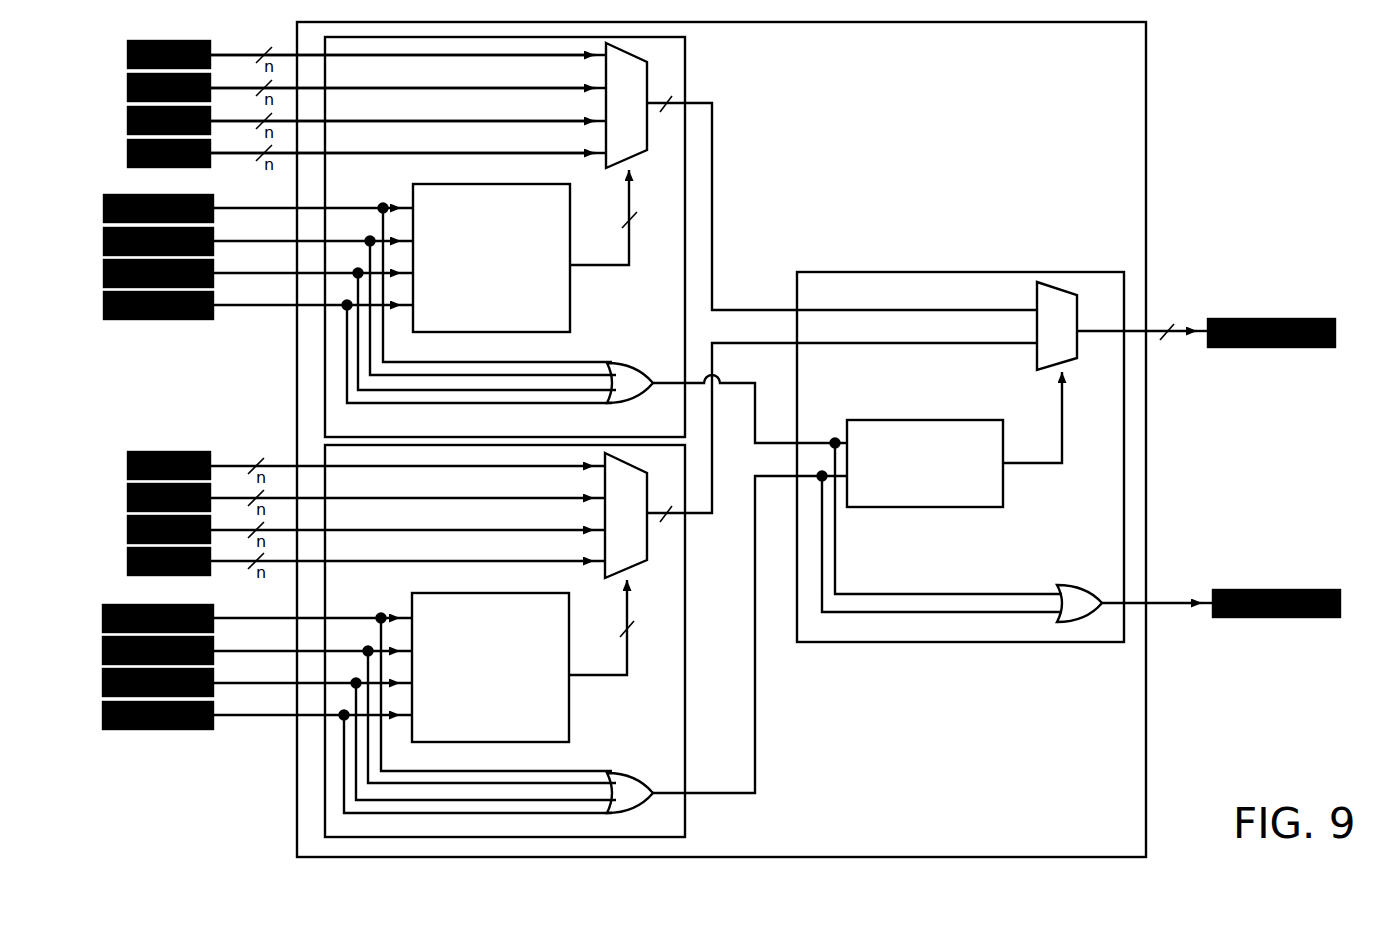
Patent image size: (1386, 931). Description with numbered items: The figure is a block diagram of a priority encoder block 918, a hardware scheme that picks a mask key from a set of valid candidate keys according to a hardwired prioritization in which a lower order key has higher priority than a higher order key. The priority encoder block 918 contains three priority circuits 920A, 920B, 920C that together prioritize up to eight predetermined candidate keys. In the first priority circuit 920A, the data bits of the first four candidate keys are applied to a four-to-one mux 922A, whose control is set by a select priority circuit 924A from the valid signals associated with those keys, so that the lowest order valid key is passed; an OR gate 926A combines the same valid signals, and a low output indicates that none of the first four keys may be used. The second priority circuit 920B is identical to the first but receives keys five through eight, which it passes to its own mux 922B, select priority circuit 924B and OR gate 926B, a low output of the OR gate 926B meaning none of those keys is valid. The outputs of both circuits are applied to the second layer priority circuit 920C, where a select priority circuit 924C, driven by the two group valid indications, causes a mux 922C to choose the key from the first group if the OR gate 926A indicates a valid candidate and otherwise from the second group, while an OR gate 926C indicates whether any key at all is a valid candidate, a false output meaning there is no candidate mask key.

The priority encoder block 918 is at (1146, 153).
The first priority circuit 920A is at (685, 58).
The second priority circuit 920B is at (685, 685).
The second layer priority circuit 920C is at (953, 643).
The mux 922A is at (647, 150).
The mux 922B is at (637, 565).
The mux 922C is at (1077, 358).
The select priority circuit 924A is at (570, 277).
The select priority circuit 924B is at (569, 697).
The select priority circuit 924C is at (1003, 478).
The OR gate 926A is at (634, 362).
The OR gate 926B is at (621, 773).
The OR gate 926C is at (1079, 585).